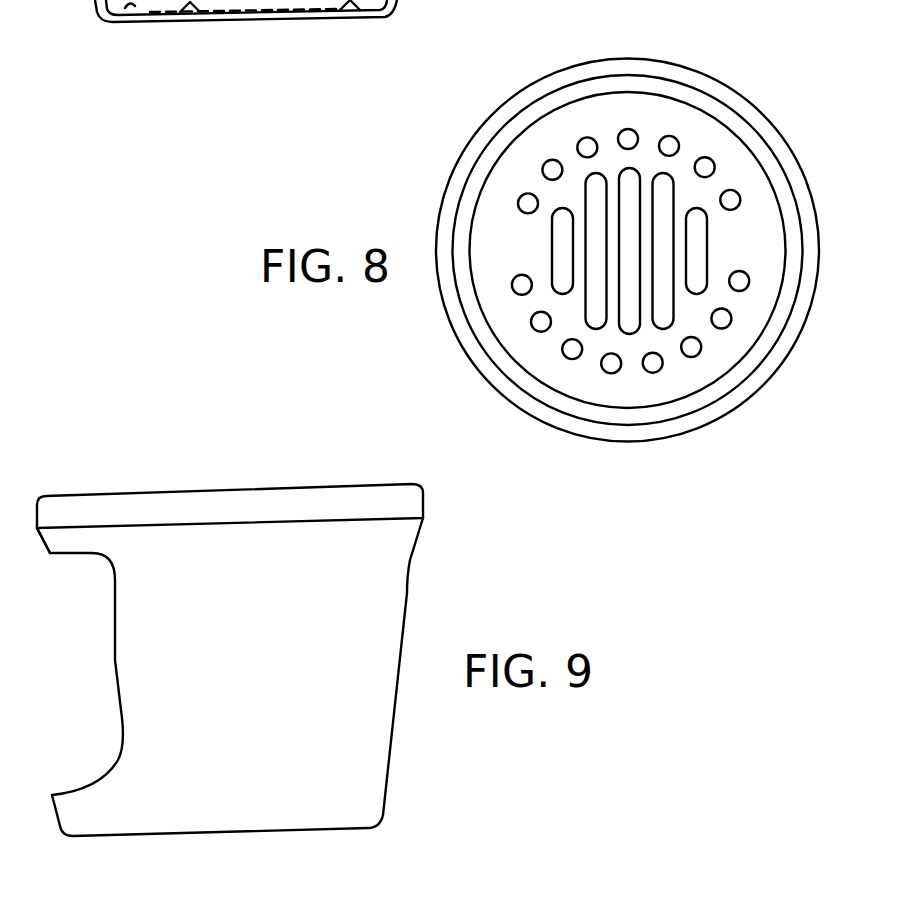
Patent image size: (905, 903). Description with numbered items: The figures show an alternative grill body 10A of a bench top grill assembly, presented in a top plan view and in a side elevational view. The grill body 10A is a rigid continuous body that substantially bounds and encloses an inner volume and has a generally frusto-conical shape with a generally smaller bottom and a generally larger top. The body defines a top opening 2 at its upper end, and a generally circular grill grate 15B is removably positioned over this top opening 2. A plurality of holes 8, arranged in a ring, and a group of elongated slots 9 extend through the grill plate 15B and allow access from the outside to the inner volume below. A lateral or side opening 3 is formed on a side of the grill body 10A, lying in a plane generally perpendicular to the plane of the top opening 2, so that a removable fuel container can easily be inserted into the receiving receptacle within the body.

In FIG. 8, the grill body 10A is at (647, 58).
In FIG. 9, the grill body 10A is at (232, 488).
In FIG. 8, the top opening 2 is at (507, 155).
In FIG. 8, the circular grill grate 15B is at (710, 138).
In FIG. 8, the slots 9 is at (698, 262).
In FIG. 8, the holes 8 is at (700, 347).
In FIG. 9, the side opening 3 is at (68, 556).